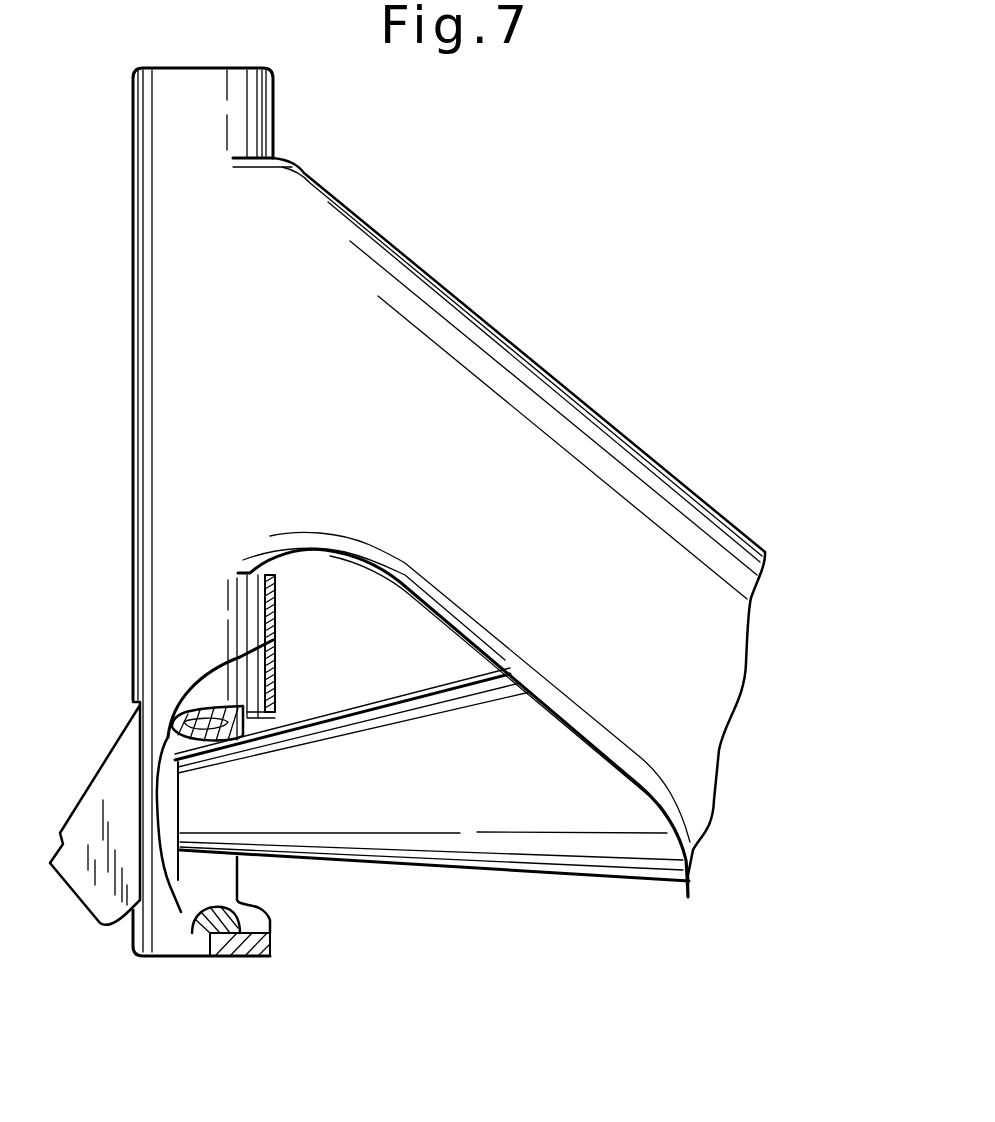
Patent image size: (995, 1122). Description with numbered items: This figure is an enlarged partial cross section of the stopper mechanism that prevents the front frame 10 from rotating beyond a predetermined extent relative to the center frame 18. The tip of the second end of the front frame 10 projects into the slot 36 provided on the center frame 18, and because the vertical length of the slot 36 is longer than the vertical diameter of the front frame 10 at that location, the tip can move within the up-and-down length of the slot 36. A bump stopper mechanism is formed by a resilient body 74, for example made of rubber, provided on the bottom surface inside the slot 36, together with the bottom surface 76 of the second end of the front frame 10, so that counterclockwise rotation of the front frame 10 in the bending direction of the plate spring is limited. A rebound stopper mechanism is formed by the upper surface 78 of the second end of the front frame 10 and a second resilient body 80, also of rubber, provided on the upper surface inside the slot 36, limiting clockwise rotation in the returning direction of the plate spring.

The front frame 10 is at (555, 850).
The center frame 18 is at (483, 352).
The slot 36 is at (279, 891).
The resilient body 74 is at (280, 903).
The bottom surface 76 is at (263, 857).
The upper surface 78 is at (270, 729).
The resilient body 80 is at (193, 707).